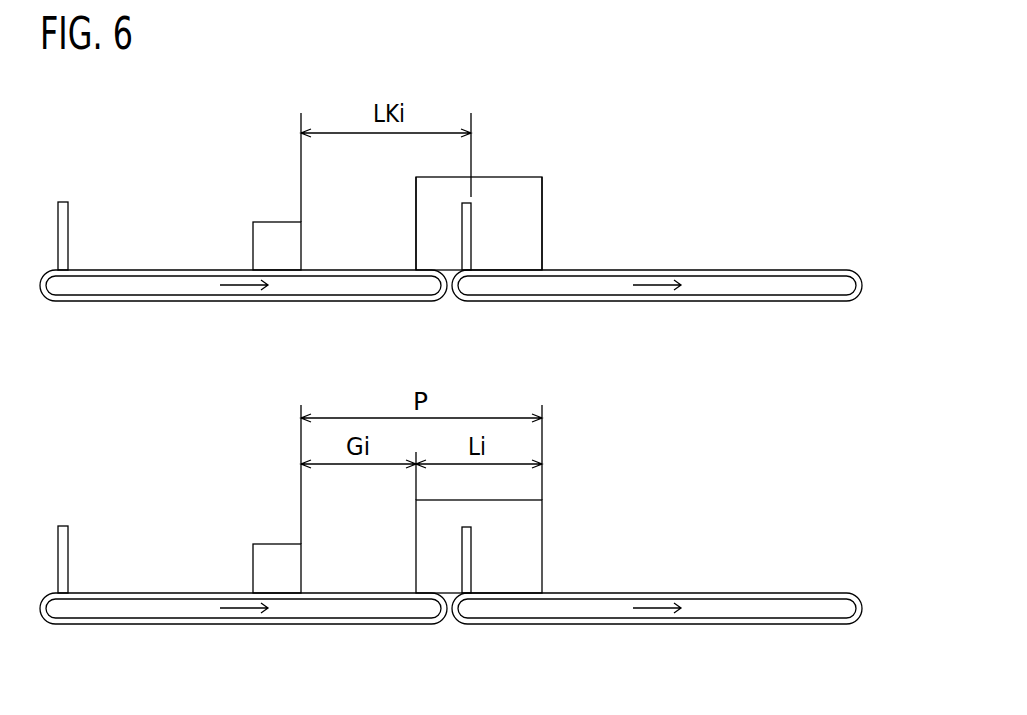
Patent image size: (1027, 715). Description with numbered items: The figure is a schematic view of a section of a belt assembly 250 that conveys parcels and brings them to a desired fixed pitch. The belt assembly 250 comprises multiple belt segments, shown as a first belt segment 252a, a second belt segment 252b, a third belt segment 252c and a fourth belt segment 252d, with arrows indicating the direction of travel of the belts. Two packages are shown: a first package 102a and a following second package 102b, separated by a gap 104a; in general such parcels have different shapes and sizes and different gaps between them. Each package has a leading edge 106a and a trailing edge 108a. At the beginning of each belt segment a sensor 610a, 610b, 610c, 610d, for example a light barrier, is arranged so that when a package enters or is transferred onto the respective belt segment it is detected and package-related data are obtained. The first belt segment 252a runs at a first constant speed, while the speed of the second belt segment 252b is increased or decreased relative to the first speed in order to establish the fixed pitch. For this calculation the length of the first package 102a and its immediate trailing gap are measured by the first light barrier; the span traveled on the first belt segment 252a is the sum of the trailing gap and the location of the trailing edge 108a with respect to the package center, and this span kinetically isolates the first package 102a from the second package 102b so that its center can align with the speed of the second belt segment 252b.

The belt assembly 250 is at (670, 92).
The first package 102a is at (517, 177).
The second package 102b is at (277, 220).
The gap 104a is at (357, 247).
The leading edge 106a is at (542, 222).
The trailing edge 108a is at (416, 200).
The first belt segment 252a is at (153, 302).
The second belt segment 252b is at (743, 303).
The third belt segment 252c is at (153, 626).
The fourth belt segment 252d is at (743, 626).
The sensor 610a is at (63, 200).
The sensor 610b is at (472, 240).
The sensor 610c is at (63, 524).
The sensor 610d is at (472, 563).